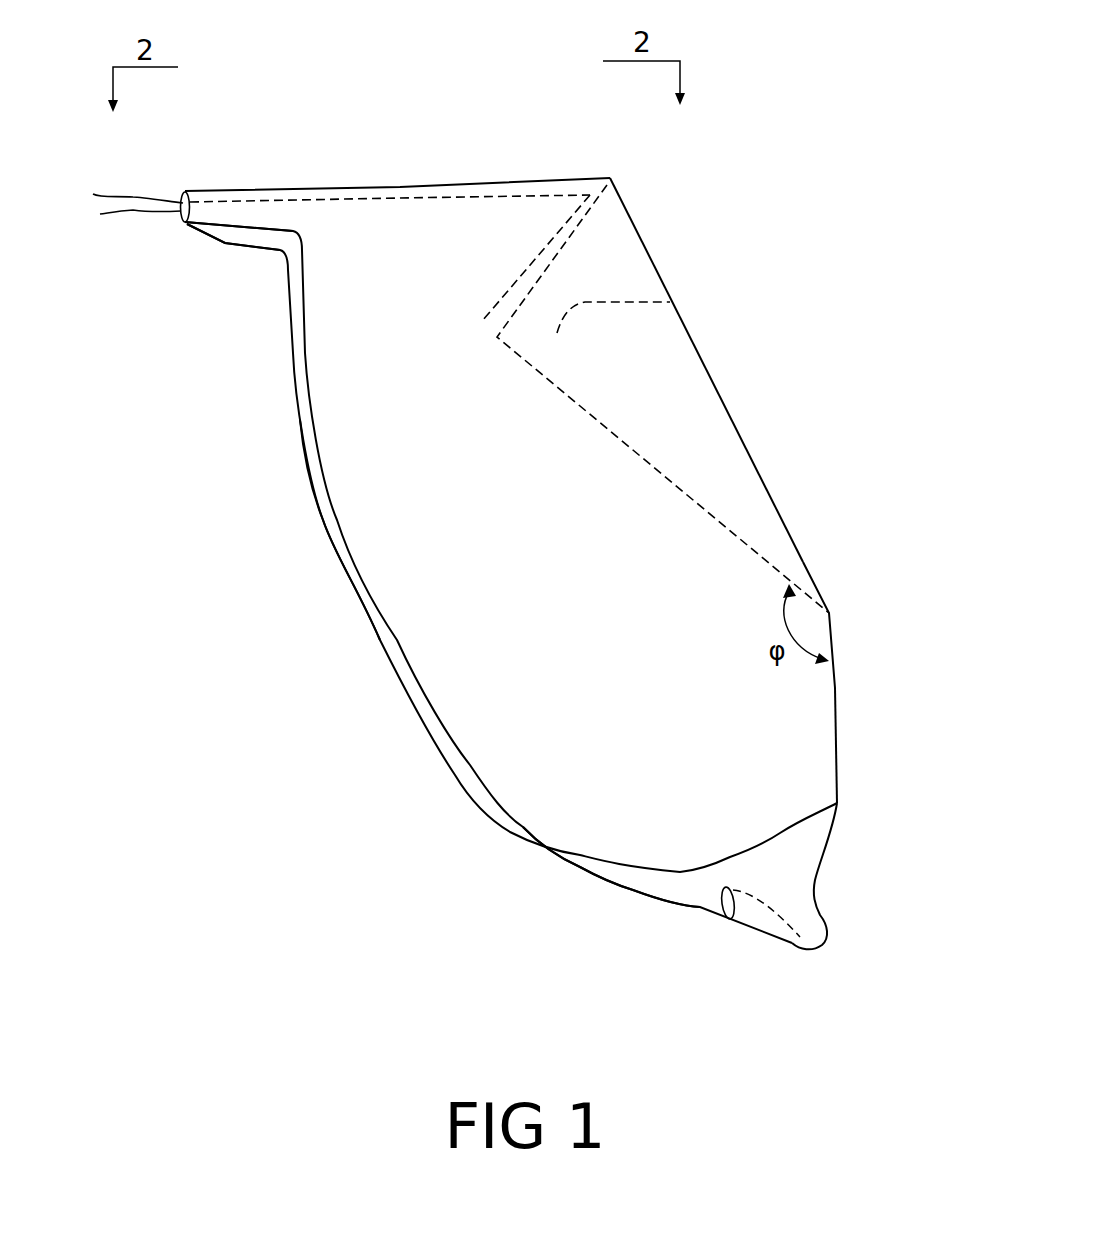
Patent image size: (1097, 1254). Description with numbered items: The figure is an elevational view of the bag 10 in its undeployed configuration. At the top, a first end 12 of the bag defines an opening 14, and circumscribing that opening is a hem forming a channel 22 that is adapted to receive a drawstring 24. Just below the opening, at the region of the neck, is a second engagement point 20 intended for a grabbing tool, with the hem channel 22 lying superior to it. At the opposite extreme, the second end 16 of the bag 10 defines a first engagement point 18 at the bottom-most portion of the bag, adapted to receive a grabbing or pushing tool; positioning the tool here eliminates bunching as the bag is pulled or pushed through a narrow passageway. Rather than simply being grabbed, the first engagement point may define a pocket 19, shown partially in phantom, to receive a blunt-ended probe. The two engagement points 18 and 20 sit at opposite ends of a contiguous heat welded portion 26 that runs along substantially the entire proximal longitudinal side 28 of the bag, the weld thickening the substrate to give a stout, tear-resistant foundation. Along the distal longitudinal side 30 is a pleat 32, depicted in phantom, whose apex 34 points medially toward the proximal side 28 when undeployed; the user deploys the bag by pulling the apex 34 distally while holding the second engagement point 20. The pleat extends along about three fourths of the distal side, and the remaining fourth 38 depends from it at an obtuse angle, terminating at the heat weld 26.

The bag 10 is at (267, 970).
The first end 12 is at (513, 172).
The opening 14 is at (402, 187).
The second end 16 is at (582, 867).
The first engagement point 18 is at (812, 917).
The pocket 19 is at (742, 917).
The second engagement point 20 is at (236, 240).
The channel 22 is at (173, 220).
The drawstring 24 is at (133, 197).
The heat welded portion 26 is at (307, 428).
The proximal longitudinal side 28 is at (383, 585).
The distal longitudinal side 30 is at (803, 562).
The pleat 32 is at (673, 302).
The apex 34 is at (485, 327).
The remaining fourth 38 is at (838, 748).